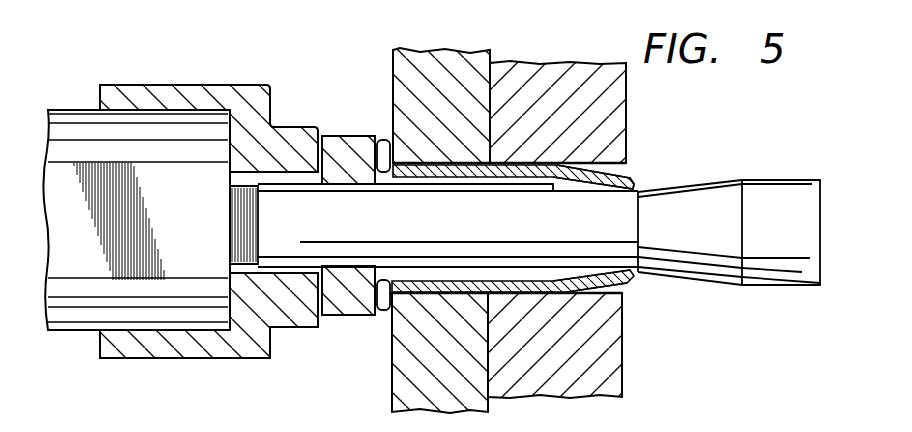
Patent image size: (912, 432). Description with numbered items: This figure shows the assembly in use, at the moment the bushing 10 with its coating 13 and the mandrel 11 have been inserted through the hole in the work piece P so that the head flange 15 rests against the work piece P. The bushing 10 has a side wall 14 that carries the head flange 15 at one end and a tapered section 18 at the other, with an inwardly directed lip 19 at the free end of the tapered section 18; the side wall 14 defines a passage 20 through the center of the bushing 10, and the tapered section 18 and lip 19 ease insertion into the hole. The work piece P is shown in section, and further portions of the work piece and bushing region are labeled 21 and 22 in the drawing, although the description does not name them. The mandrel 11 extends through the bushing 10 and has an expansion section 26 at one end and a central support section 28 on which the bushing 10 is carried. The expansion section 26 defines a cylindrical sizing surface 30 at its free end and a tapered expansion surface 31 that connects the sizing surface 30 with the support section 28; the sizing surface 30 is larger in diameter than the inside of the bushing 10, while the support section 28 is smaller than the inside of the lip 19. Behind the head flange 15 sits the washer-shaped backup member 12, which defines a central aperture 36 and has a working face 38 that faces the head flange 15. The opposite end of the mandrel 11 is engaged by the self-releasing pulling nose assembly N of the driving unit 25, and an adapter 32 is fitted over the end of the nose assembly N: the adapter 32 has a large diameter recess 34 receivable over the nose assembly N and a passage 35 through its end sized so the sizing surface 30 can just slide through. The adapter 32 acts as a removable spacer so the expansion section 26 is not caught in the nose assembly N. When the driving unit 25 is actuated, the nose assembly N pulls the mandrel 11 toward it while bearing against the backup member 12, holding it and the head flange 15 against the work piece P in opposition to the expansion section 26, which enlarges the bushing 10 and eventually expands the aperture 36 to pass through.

The bushing 10 is at (645, 296).
The mandrel 11 is at (831, 139).
The backup member 12 is at (345, 127).
The coating 13 is at (533, 162).
The side wall 14 is at (566, 162).
The head flange 15 is at (384, 138).
The tapered section 18 is at (600, 162).
The lip 19 is at (633, 182).
The passage 20 is at (463, 270).
The lower ferrule nose 21 is at (523, 284).
The body bore section 22 is at (452, 163).
The driving unit 25 is at (88, 92).
The expansion section 26 is at (743, 178).
The support section 28 is at (232, 202).
The sizing surface 30 is at (807, 180).
The tapered expansion surface 31 is at (705, 182).
The adapter 32 is at (247, 86).
The recess 34 is at (150, 92).
The passage 35 is at (283, 158).
The aperture 36 is at (340, 263).
The face 38 is at (374, 157).
The nose assembly N is at (50, 123).
The work piece P is at (517, 62).